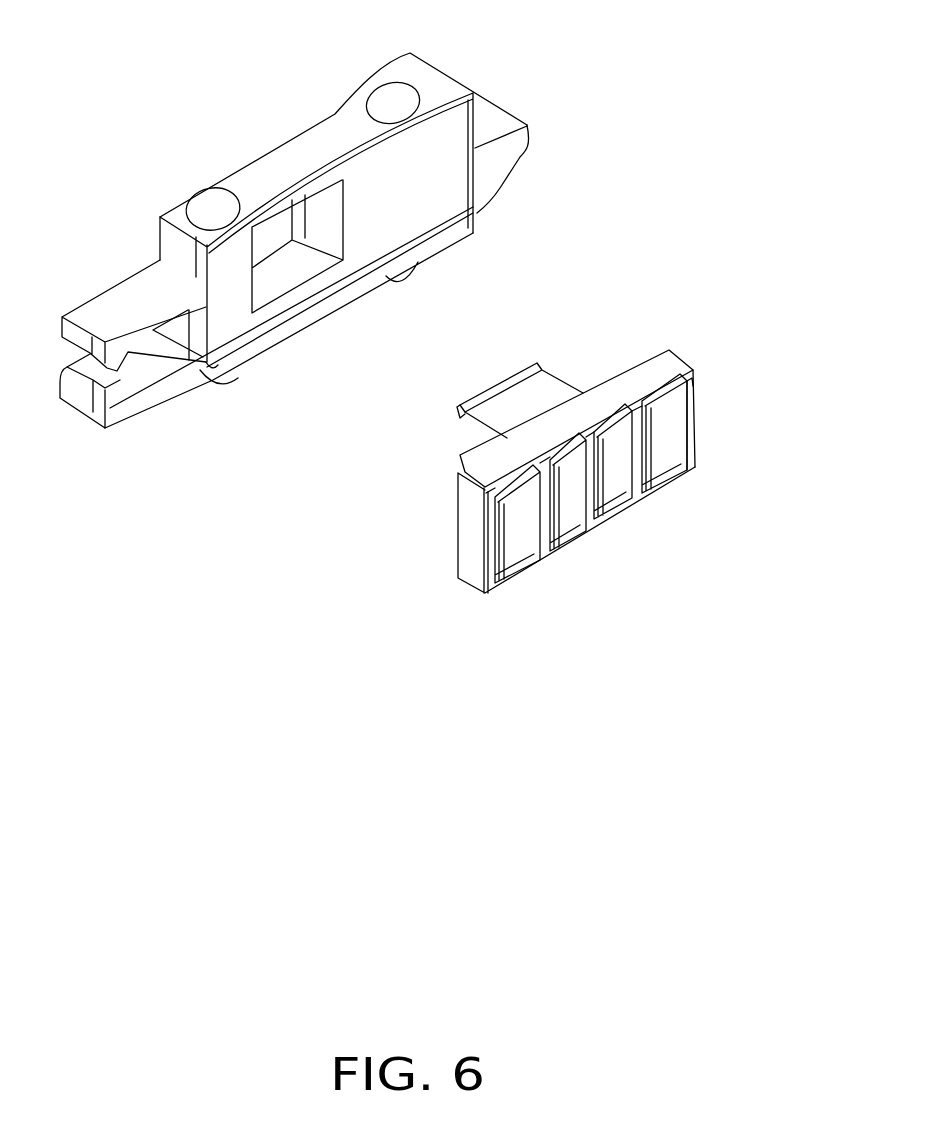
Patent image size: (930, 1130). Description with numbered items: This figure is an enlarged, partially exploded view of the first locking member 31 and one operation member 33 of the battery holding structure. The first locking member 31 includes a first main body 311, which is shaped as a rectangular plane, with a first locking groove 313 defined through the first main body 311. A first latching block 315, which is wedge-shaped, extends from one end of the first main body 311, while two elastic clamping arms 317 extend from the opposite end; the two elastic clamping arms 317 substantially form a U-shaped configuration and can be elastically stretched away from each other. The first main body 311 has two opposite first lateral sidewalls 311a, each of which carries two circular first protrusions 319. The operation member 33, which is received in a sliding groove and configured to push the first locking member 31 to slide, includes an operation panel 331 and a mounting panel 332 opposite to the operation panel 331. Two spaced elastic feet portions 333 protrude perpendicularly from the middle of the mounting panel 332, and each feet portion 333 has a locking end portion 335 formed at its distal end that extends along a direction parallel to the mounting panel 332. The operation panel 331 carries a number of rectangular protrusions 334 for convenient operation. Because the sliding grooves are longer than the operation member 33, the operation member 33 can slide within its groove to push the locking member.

The first locking member 31 is at (331, 71).
The first main body 311 is at (307, 147).
The first lateral sidewall 311a is at (245, 193).
The first locking groove 313 is at (273, 235).
The first latching block 315 is at (497, 162).
The elastic clamping arm 317 is at (110, 307).
The first protrusion 319 is at (395, 100).
The operation member 33 is at (683, 350).
The operation panel 331 is at (633, 418).
The mounting panel 332 is at (608, 380).
The elastic feet portion 333 is at (508, 408).
The rectangular protrusion 334 is at (683, 423).
The locking end portion 335 is at (456, 408).